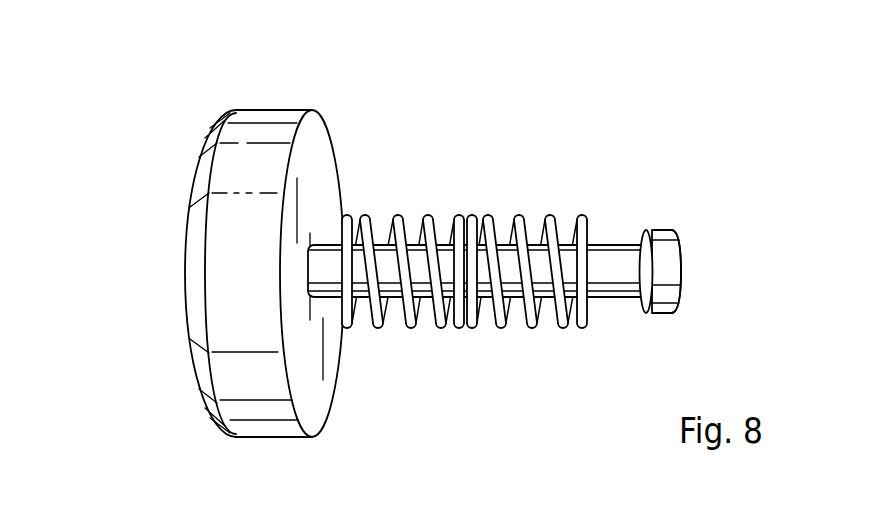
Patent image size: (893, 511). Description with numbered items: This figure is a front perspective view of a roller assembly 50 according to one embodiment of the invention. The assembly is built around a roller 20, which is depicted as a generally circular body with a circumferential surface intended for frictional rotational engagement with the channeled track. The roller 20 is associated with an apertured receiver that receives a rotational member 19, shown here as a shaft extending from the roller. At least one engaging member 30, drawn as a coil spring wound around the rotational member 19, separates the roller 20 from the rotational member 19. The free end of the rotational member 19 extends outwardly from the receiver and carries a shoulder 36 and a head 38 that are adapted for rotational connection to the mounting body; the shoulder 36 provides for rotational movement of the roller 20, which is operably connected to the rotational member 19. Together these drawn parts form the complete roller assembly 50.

The roller assembly 50 is at (140, 82).
The roller 20 is at (227, 250).
The engaging member 30 is at (428, 216).
The rotational member 19 is at (614, 275).
The shoulder 36 is at (648, 230).
The head 38 is at (684, 272).